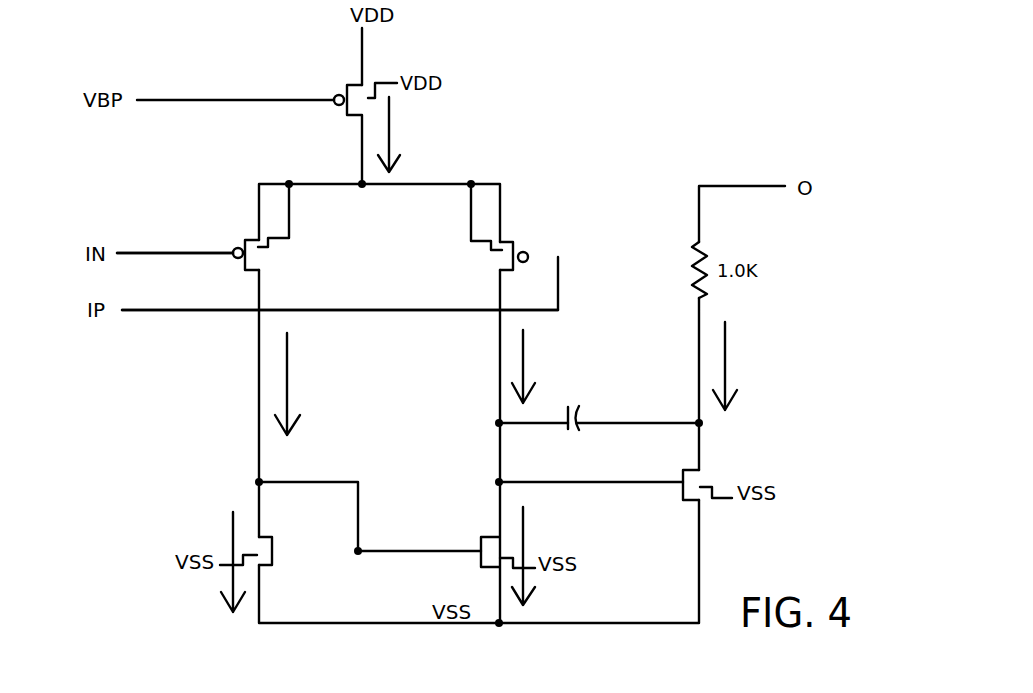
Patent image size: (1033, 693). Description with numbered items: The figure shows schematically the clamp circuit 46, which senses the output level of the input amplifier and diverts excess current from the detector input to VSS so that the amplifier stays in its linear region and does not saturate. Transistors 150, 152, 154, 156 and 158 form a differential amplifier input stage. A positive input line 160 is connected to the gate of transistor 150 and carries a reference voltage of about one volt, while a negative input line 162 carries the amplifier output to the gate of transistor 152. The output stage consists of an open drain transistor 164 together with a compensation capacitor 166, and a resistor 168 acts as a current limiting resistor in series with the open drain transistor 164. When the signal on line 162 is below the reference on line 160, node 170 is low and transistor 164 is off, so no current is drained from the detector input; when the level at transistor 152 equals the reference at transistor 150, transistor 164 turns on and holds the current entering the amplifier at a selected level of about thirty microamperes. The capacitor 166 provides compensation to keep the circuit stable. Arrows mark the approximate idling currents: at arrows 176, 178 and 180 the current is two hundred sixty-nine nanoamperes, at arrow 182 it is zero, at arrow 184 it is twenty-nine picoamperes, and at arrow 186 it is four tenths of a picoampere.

The clamp circuit 46 is at (225, 427).
The transistor 150 is at (542, 255).
The transistor 152 is at (243, 244).
The transistor 154 is at (492, 545).
The transistor 156 is at (263, 567).
The transistor 158 is at (355, 98).
The positive input line 160 is at (150, 311).
The negative input line 162 is at (137, 252).
The open drain transistor 164 is at (690, 478).
The compensation capacitor 166 is at (577, 408).
The resistor 168 is at (705, 242).
The node 170 is at (495, 422).
The arrow 176 is at (390, 128).
The arrow 178 is at (288, 393).
The arrow 180 is at (232, 538).
The arrow 182 is at (525, 361).
The arrow 184 is at (524, 577).
The arrow 186 is at (726, 358).